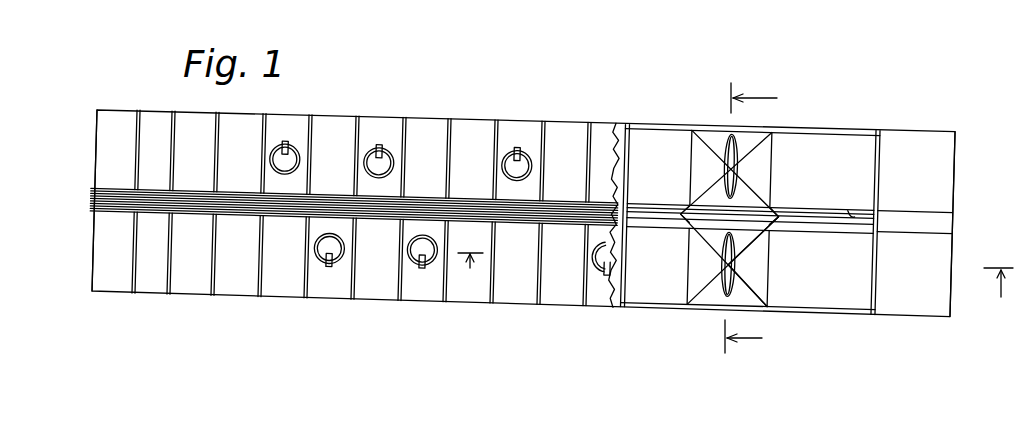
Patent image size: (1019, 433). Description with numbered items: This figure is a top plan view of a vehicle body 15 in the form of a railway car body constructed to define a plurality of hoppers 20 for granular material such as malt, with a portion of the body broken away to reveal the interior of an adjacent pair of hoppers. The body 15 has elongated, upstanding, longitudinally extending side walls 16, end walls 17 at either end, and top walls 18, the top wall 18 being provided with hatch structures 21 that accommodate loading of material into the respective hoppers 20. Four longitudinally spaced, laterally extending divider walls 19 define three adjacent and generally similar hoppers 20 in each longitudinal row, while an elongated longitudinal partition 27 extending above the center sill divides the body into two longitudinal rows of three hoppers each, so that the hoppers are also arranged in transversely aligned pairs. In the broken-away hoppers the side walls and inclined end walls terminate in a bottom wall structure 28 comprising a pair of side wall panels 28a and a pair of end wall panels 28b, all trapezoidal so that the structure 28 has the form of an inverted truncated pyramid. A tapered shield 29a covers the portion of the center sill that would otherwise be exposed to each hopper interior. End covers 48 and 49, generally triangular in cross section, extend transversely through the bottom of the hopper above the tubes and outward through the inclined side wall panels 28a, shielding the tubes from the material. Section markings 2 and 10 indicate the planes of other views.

The section line 2- 2 is at (735, 289).
The section line 10- 10 is at (744, 222).
The vehicle body 15 is at (490, 116).
The side wall 16 is at (838, 127).
The end wall 17 is at (97, 149).
The top wall 18 is at (427, 128).
The divider wall 19 is at (627, 250).
The hopper 20 is at (672, 143).
The hatch structure 21 is at (372, 170).
The partition 27 is at (850, 217).
The bottom wall structure 28 is at (753, 180).
The side wall panel 28a is at (712, 290).
The end wall panel 28b is at (733, 166).
The tapered shield 29a is at (760, 212).
The end cover 48 is at (749, 288).
The end cover 49 is at (748, 243).